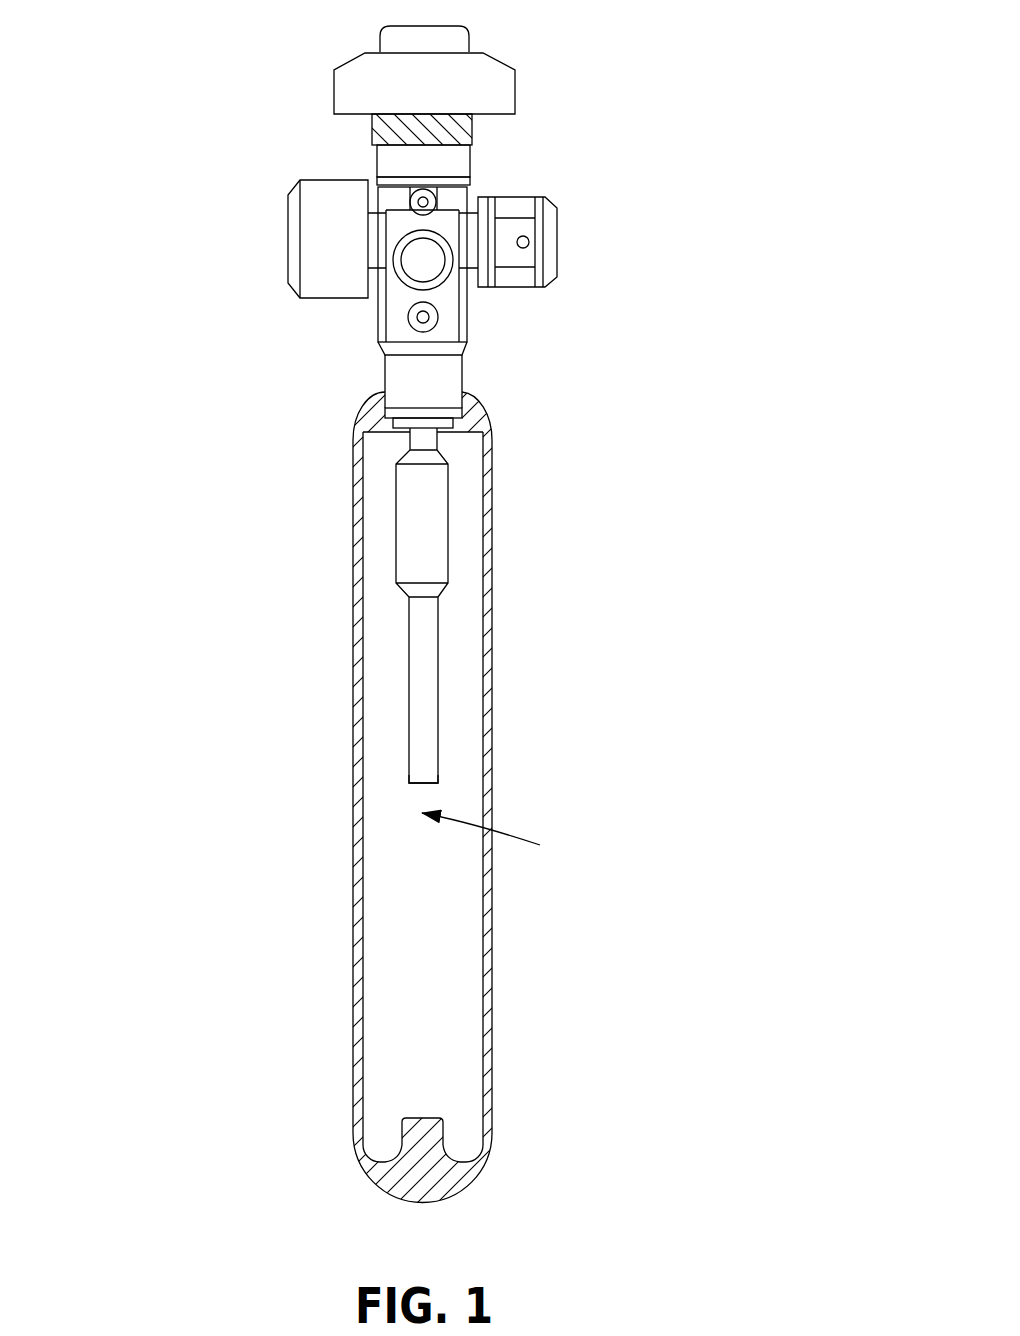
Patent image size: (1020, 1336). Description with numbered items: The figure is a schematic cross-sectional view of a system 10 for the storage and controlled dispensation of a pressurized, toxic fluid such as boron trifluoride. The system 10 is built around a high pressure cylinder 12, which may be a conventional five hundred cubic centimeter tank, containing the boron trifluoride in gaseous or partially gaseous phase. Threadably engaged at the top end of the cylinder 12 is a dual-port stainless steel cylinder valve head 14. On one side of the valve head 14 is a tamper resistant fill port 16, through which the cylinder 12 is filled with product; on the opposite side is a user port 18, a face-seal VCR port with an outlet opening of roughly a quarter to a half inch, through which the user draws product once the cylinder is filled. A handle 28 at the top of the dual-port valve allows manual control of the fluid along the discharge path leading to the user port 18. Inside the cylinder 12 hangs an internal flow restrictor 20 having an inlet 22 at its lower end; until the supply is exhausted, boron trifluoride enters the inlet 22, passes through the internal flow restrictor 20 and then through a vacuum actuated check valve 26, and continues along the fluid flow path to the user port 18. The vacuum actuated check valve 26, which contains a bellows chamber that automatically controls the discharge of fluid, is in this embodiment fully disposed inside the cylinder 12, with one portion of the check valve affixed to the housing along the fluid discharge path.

The system 10 is at (420, 675).
The high pressure cylinder 12 is at (355, 610).
The cylinder valve head 14 is at (397, 221).
The tamper resistant fill port 16 is at (290, 237).
The user port 18 is at (555, 247).
The internal flow restrictor 20 is at (442, 660).
The inlet 22 is at (423, 783).
The vacuum actuated check valve 26 is at (445, 498).
The handle 28 is at (497, 60).